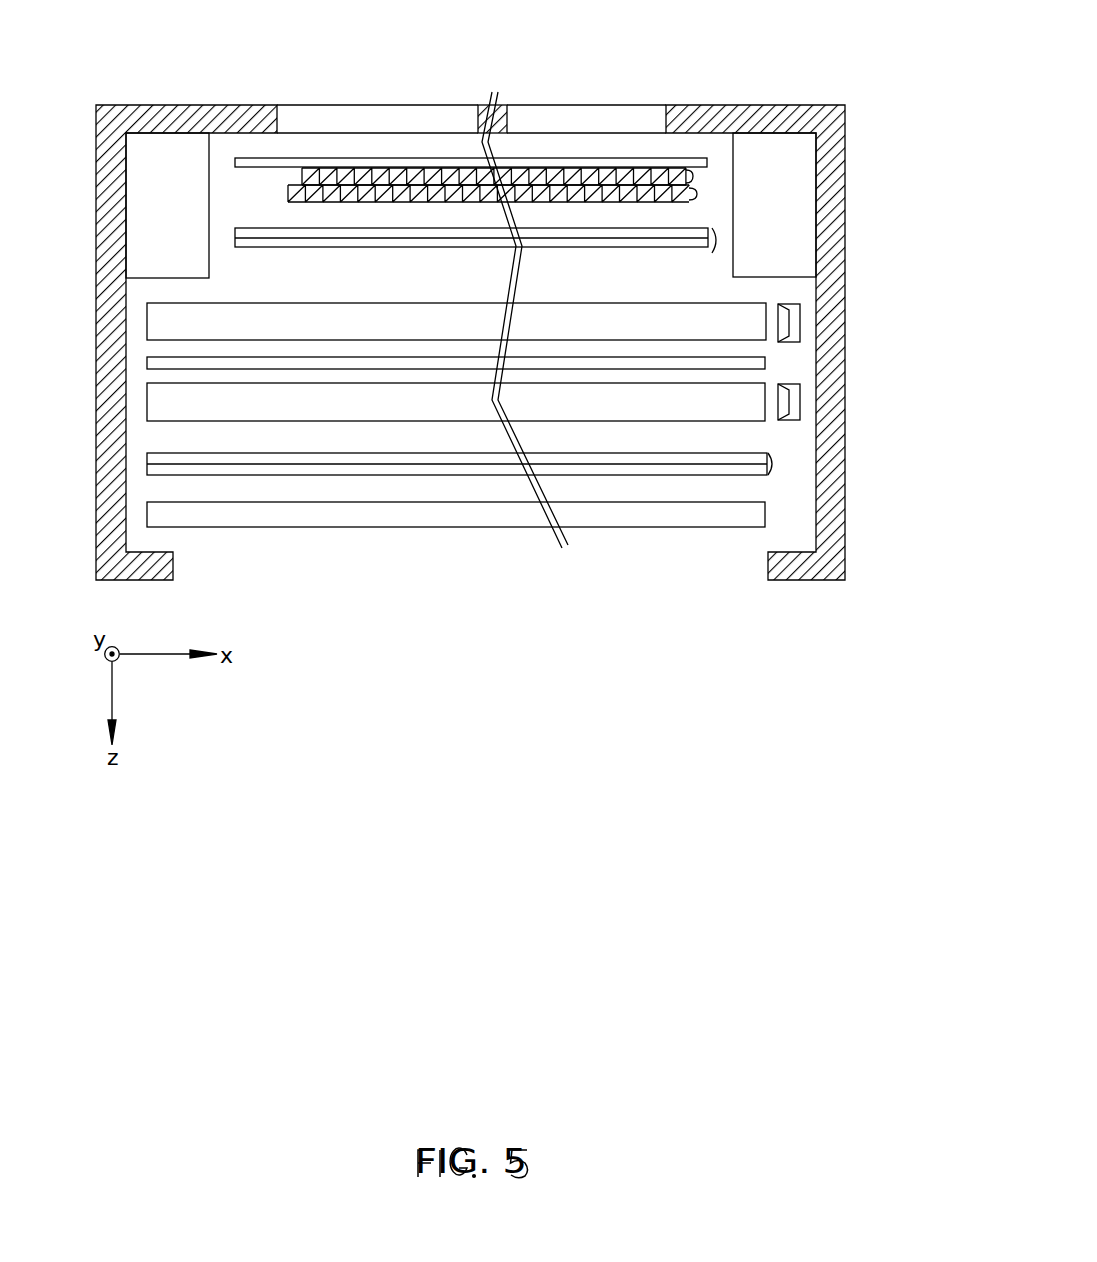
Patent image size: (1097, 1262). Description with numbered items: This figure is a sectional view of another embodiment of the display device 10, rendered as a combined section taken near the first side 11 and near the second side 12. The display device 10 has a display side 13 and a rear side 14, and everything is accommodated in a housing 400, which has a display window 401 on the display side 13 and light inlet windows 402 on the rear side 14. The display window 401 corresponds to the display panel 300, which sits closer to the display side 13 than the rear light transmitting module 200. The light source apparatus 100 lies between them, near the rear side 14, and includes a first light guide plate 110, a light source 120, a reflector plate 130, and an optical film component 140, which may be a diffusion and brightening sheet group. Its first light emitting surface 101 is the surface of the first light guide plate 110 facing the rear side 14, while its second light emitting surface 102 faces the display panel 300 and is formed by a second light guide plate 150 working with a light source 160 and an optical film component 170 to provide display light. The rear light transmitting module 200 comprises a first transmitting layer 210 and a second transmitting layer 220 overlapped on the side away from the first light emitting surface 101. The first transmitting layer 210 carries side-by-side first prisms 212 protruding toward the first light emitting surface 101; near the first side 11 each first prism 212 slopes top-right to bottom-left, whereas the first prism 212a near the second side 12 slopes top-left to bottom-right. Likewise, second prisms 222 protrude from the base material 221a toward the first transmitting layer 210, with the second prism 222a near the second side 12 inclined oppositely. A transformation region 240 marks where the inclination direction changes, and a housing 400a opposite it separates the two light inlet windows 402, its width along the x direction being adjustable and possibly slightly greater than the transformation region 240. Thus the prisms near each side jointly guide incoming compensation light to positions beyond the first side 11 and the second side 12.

The display device 10 is at (95, 48).
The first side 11 is at (98, 91).
The second side 12 is at (852, 92).
The display side 13 is at (433, 580).
The rear side 14 is at (376, 73).
The light source apparatus 100 is at (502, 410).
The first light emitting surface 101 is at (260, 303).
The second light emitting surface 102 is at (683, 420).
The first light guide plate 110 is at (758, 303).
The light source 120 is at (800, 322).
The reflector plate 130 is at (765, 362).
The optical film component 140 is at (717, 240).
The second light guide plate 150 is at (765, 421).
The light source 160 is at (800, 403).
The optical film component 170 is at (774, 463).
The rear light transmitting module 200 is at (502, 133).
The first transmitting layer 210 is at (697, 195).
The first prism 212 is at (288, 195).
The first prism 212a is at (618, 186).
The second transmitting layer 220 is at (693, 177).
The base material 221a is at (707, 163).
The second prism 222 is at (300, 178).
The second prism 222a is at (606, 168).
The transformation region 240 is at (482, 160).
The display panel 300 is at (765, 512).
The housing 400 is at (805, 572).
The housing 400a is at (483, 103).
The display window 401 is at (531, 577).
The light inlet window 402 is at (414, 99).